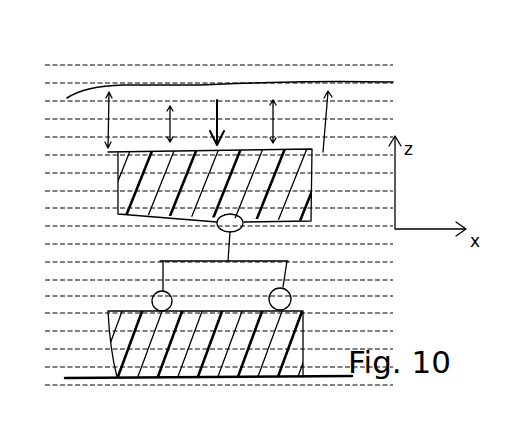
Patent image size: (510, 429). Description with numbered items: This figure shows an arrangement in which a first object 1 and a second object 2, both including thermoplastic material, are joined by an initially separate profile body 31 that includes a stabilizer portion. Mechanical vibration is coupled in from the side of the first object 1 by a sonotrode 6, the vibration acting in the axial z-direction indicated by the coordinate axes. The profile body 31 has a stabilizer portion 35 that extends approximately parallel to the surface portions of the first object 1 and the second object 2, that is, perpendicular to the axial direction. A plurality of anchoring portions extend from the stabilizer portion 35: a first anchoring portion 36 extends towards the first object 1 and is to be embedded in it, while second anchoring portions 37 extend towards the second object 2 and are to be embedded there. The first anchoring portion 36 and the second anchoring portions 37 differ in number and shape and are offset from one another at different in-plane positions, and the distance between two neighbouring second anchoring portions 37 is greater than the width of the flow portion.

The sonotrode 6 is at (123, 123).
The first object 1 is at (280, 212).
The first anchoring portion 36 is at (232, 215).
The profile body 31 is at (222, 261).
The stabilizer portion 35 is at (163, 262).
The second anchoring portion 37 is at (156, 303).
The second object 2 is at (295, 335).